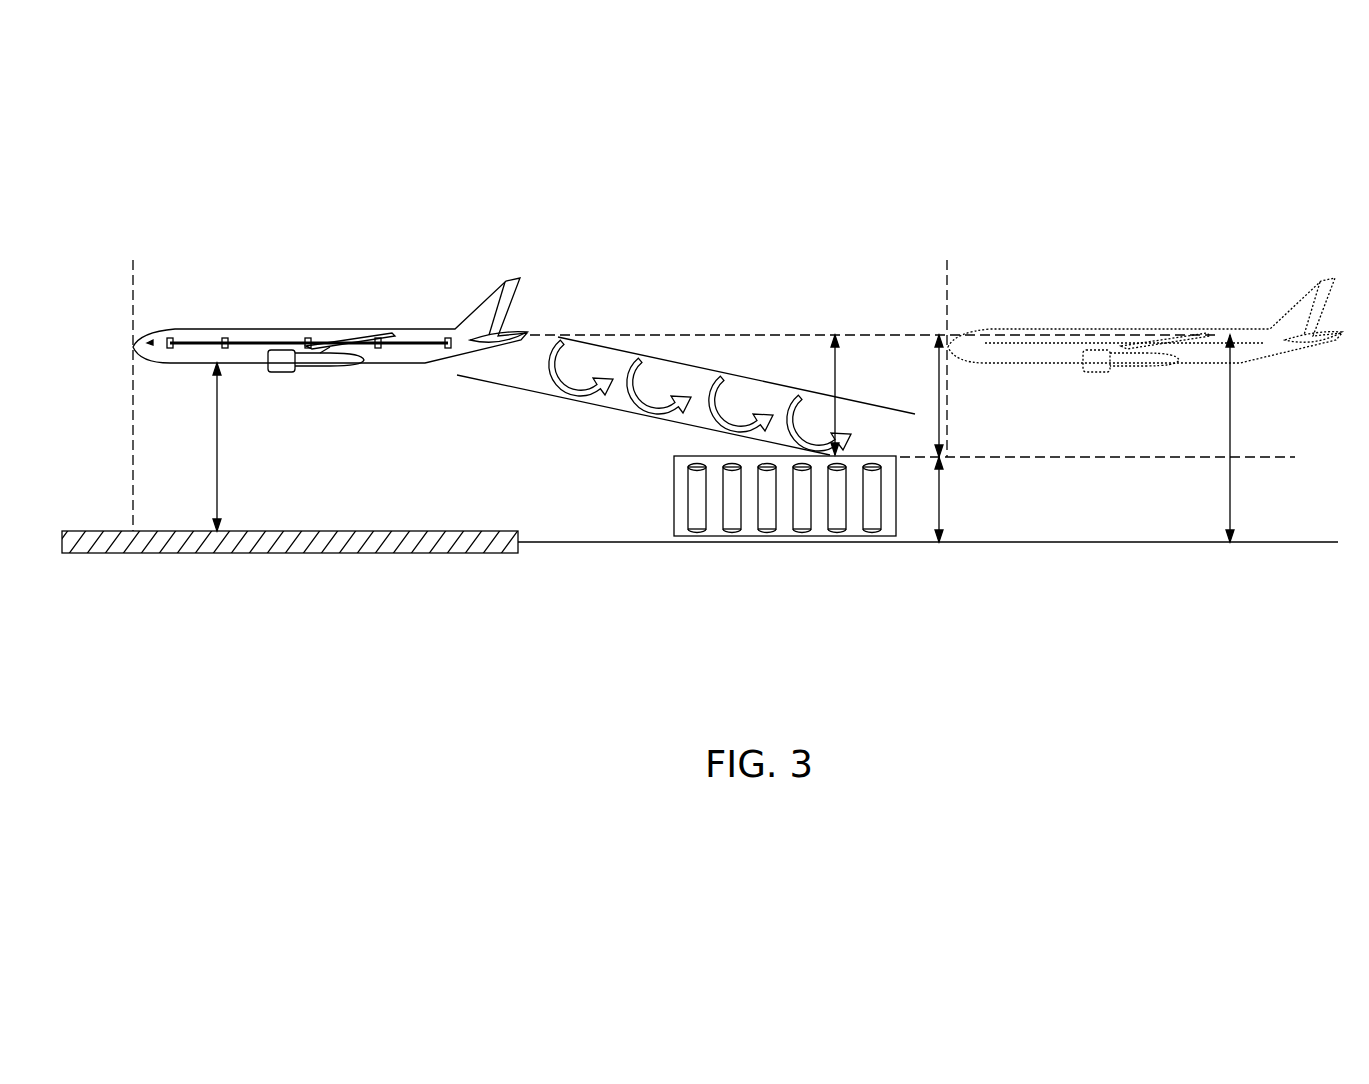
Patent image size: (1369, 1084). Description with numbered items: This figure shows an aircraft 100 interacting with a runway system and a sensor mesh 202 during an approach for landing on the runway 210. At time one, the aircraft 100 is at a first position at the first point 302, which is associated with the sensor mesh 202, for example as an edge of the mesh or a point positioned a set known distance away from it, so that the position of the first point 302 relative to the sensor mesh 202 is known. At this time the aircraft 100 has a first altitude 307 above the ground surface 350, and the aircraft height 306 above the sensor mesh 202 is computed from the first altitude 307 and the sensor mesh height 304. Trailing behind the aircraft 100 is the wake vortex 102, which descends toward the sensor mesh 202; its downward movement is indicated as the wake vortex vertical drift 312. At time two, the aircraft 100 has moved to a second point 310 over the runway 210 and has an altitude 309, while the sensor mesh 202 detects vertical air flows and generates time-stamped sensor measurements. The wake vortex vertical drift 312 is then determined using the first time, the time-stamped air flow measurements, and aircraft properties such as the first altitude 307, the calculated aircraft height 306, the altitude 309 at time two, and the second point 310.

The aircraft 100 is at (297, 328).
The wake vortex 102 is at (632, 412).
The sensor mesh 202 is at (797, 519).
The runway 210 is at (286, 557).
The first point 302 is at (946, 277).
The sensor mesh height 304 is at (941, 500).
The aircraft height 306 is at (939, 430).
The first altitude 307 is at (1232, 483).
The altitude 309 is at (218, 433).
The second point 310 is at (134, 278).
The wake vortex vertical drift 312 is at (838, 372).
The ground 350 is at (1058, 543).